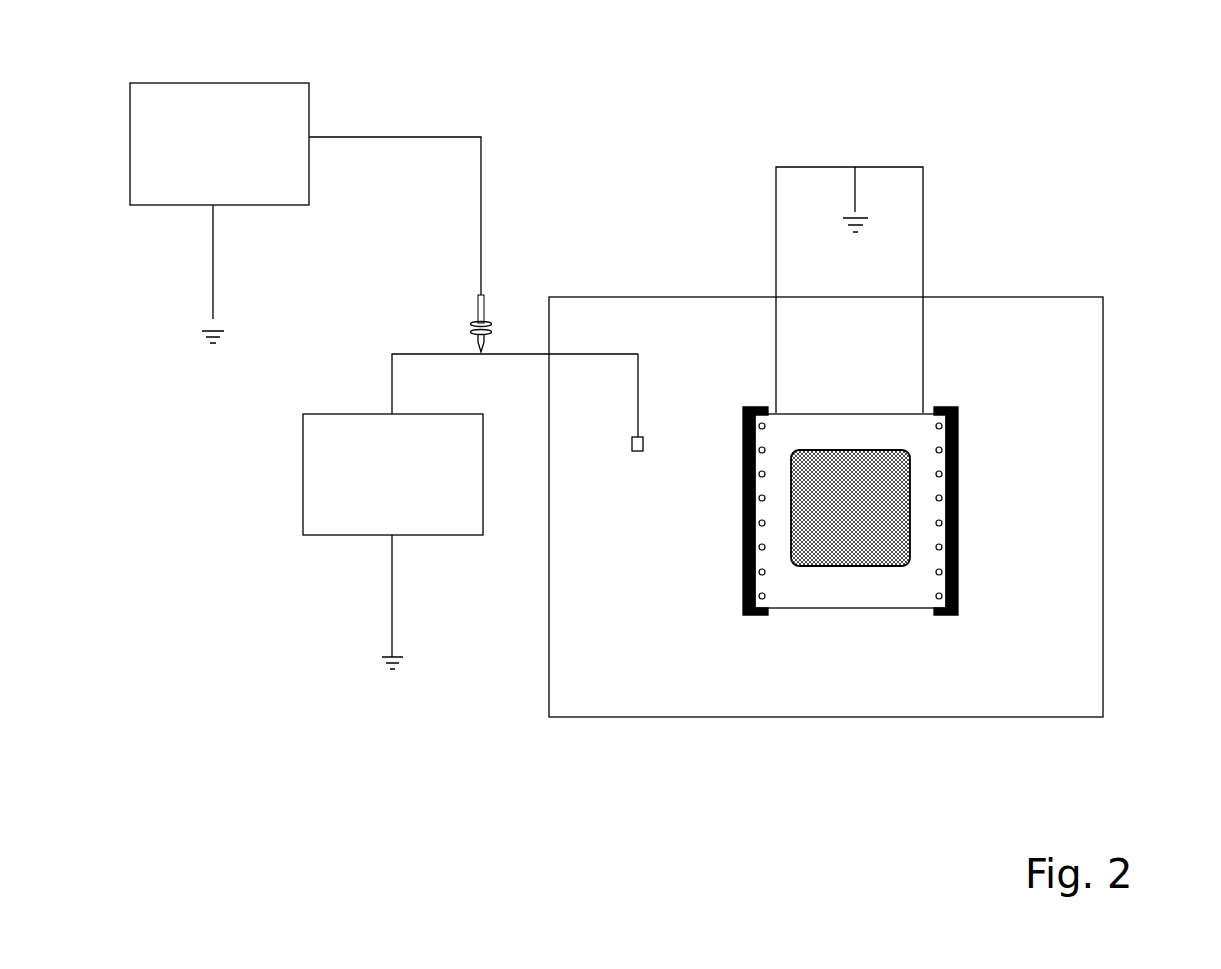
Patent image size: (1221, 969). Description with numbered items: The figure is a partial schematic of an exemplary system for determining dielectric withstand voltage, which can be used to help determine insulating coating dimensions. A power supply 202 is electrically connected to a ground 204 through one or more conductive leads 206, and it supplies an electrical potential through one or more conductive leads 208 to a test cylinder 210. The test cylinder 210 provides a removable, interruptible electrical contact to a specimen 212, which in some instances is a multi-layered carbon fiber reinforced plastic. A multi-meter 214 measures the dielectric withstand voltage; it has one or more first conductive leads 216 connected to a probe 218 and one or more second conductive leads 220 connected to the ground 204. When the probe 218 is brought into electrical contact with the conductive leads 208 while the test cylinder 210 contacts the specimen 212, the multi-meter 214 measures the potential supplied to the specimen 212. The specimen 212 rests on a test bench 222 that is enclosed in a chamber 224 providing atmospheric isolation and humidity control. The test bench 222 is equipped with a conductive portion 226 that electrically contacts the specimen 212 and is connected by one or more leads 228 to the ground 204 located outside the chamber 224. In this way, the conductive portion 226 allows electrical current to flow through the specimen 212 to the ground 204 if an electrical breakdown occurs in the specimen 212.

The power supply 202 is at (449, 413).
The ground 204 is at (212, 360).
The conductive leads 206 is at (392, 597).
The conductive leads 208 is at (402, 353).
The test cylinder 210 is at (644, 443).
The specimen 212 is at (845, 567).
The multi-meter 214 is at (183, 82).
The first conductive leads 216 is at (481, 152).
The probe 218 is at (478, 307).
The second conductive leads 220 is at (213, 273).
The test bench 222 is at (946, 613).
The chamber 224 is at (1020, 722).
The conductive portion 226 is at (850, 413).
The leads 228 is at (923, 220).